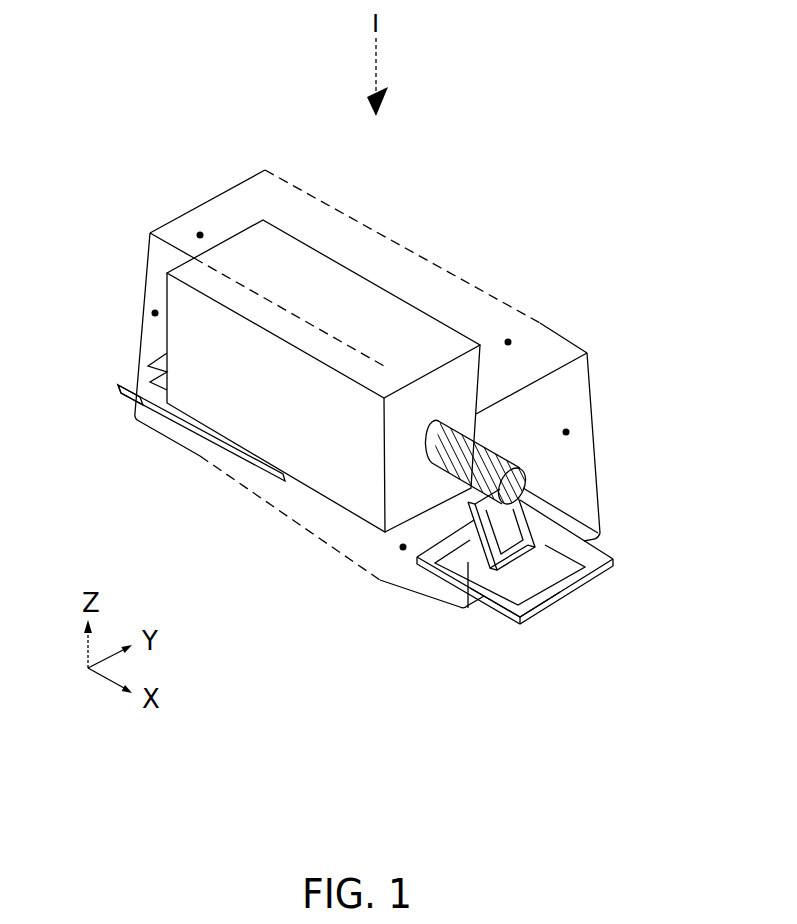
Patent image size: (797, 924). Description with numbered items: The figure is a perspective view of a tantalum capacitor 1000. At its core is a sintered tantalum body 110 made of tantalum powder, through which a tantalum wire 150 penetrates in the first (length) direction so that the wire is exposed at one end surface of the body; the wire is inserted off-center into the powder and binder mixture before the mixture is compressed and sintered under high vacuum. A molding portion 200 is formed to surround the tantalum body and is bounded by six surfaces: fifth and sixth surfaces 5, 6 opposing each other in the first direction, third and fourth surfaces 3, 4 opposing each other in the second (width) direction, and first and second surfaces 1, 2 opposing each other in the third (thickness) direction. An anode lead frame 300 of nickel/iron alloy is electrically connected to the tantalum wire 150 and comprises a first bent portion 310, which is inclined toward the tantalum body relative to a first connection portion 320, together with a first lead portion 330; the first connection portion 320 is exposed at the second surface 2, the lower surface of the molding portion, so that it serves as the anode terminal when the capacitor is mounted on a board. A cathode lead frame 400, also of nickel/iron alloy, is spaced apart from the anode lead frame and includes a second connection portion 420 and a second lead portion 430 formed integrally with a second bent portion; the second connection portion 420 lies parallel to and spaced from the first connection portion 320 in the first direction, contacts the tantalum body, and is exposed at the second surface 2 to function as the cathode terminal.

The tantalum capacitor 1000 is at (141, 99).
The first surface 1 is at (305, 202).
The second surface 2 is at (403, 550).
The third surface 3 is at (155, 313).
The fourth surface 4 is at (508, 342).
The fifth surface 5 is at (566, 432).
The sixth surface 6 is at (200, 235).
The sintered tantalum body 110 is at (370, 303).
The tantalum wire 150 is at (525, 477).
The molding portion 200 is at (455, 280).
The anode lead frame 300 is at (512, 602).
The first bent portion 310 is at (532, 527).
The first connection portion 320 is at (458, 570).
The first lead portion 330 is at (523, 603).
The cathode lead frame 400 is at (155, 432).
The second connection portion 420 is at (133, 410).
The second lead portion 430 is at (145, 372).